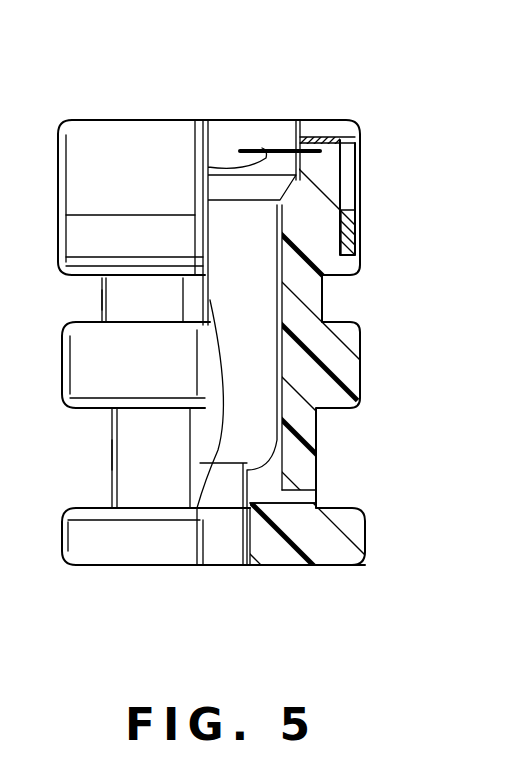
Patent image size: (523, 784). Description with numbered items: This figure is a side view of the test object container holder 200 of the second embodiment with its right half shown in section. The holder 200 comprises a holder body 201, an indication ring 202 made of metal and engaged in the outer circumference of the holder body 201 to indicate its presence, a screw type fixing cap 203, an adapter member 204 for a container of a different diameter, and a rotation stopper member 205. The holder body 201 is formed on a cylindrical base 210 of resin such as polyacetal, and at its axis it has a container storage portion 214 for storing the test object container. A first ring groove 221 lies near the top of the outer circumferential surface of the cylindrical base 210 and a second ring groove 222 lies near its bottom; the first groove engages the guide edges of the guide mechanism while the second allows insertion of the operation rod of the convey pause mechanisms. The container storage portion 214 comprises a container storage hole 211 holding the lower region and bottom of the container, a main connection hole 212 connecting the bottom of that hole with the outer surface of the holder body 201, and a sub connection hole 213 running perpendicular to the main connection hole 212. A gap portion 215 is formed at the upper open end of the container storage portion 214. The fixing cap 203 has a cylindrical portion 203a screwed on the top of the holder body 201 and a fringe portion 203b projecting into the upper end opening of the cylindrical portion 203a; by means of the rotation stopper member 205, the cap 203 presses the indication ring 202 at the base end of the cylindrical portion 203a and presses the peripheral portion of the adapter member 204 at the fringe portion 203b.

The test object container holder 200 is at (126, 104).
The holder body 201 is at (350, 355).
The indication ring 202 is at (352, 228).
The screw type fixing cap 203 is at (462, 56).
The cylindrical portion 203a is at (366, 128).
The fringe portion 203b is at (320, 120).
The adapter member 204 is at (205, 168).
The rotation stopper member 205 is at (255, 149).
The cylindrical base 210 is at (325, 298).
The container storage hole 211 is at (200, 470).
The main connection hole 212 is at (228, 547).
The sub connection hole 213 is at (300, 550).
The container storage portion 214 is at (335, 610).
The gap portion 215 is at (360, 160).
The first ring groove 221 is at (100, 302).
The second ring groove 222 is at (112, 462).